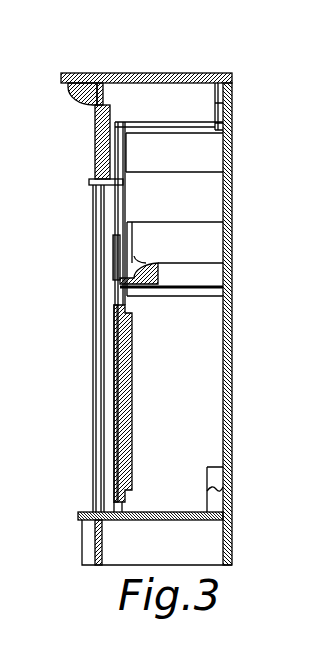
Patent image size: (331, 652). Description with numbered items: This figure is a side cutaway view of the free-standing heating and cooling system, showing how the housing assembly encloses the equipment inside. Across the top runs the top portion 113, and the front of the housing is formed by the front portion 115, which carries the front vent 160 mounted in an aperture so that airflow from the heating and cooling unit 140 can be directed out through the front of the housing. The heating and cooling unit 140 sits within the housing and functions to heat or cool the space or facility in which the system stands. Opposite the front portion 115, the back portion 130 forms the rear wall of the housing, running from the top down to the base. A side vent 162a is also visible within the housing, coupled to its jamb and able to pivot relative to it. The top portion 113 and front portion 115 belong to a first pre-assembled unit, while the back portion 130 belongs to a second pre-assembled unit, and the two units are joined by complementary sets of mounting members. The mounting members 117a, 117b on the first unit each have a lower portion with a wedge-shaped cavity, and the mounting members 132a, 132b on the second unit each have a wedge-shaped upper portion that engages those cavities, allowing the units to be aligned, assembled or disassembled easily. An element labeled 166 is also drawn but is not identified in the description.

The top portion 113 is at (140, 73).
The front portion 115 is at (94, 140).
The mounting member 117a is at (218, 481).
The mounting member 117b is at (219, 93).
The back portion 130 is at (232, 343).
The mounting member 132a is at (220, 503).
The mounting member 132b is at (219, 113).
The heating and cooling unit 140 is at (213, 157).
The front vent 160 is at (113, 260).
The side vent 162a is at (210, 243).
The lens 166 is at (214, 200).